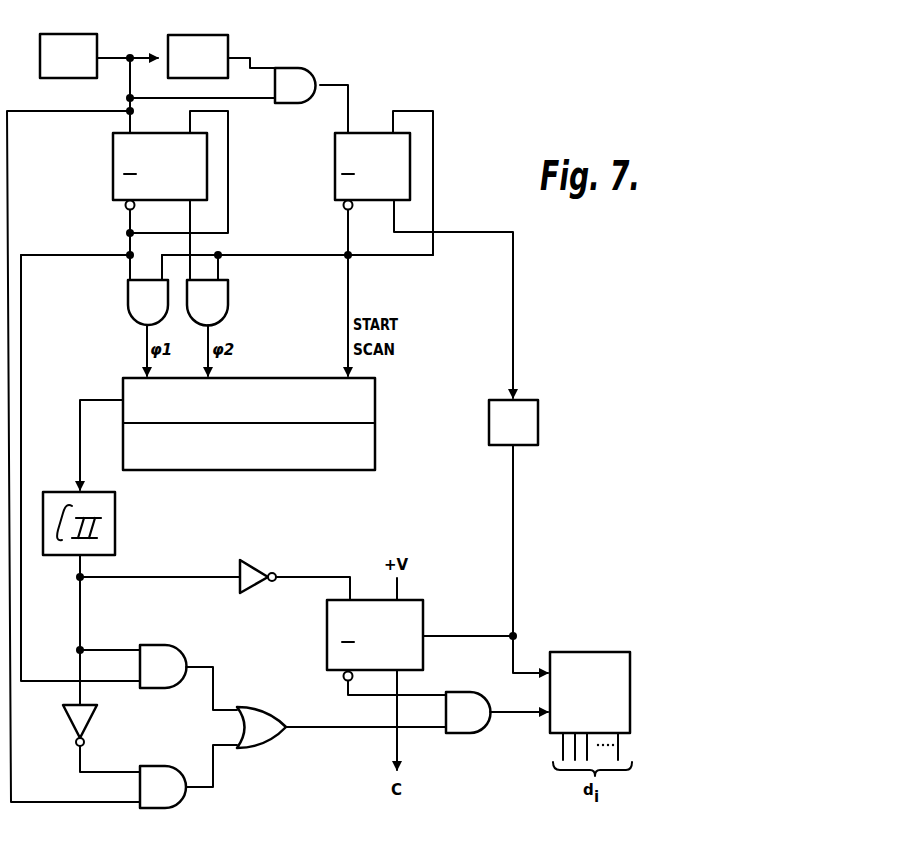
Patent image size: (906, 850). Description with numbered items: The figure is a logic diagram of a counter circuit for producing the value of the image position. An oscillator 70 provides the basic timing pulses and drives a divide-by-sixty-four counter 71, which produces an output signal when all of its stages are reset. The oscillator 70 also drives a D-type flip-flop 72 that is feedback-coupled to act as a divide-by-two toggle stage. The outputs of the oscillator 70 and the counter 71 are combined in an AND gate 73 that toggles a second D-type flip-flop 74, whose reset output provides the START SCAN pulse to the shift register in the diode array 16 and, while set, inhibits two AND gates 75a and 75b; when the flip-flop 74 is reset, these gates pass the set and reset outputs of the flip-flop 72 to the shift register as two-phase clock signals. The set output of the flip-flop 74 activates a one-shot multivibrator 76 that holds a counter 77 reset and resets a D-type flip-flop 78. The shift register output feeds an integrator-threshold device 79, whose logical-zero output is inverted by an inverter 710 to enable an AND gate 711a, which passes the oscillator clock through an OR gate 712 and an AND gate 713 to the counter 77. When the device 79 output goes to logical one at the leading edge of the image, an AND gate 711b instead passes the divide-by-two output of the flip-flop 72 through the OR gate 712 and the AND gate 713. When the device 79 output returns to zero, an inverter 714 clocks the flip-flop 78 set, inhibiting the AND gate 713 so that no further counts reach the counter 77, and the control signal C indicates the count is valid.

The oscillator 70 is at (68, 33).
The divide-by-64 counter 71 is at (198, 33).
The AND gate 73 is at (298, 67).
The D-type flip-flop 72 is at (113, 165).
The second D-type flip-flop 74 is at (335, 165).
The AND gate 75a is at (128, 295).
The AND gate 75b is at (228, 303).
The diode array 16 is at (375, 415).
The one-shot multivibrator 76 is at (538, 423).
The integrator-threshold device 79 is at (115, 515).
The inverter 714 is at (258, 545).
The AND gate 711b is at (162, 644).
The OR gate 712 is at (255, 706).
The inverter 710 is at (90, 722).
The AND gate 711a is at (152, 765).
The D-type flip-flop 78 is at (327, 634).
The AND gate 713 is at (462, 690).
The counter 77 is at (587, 650).